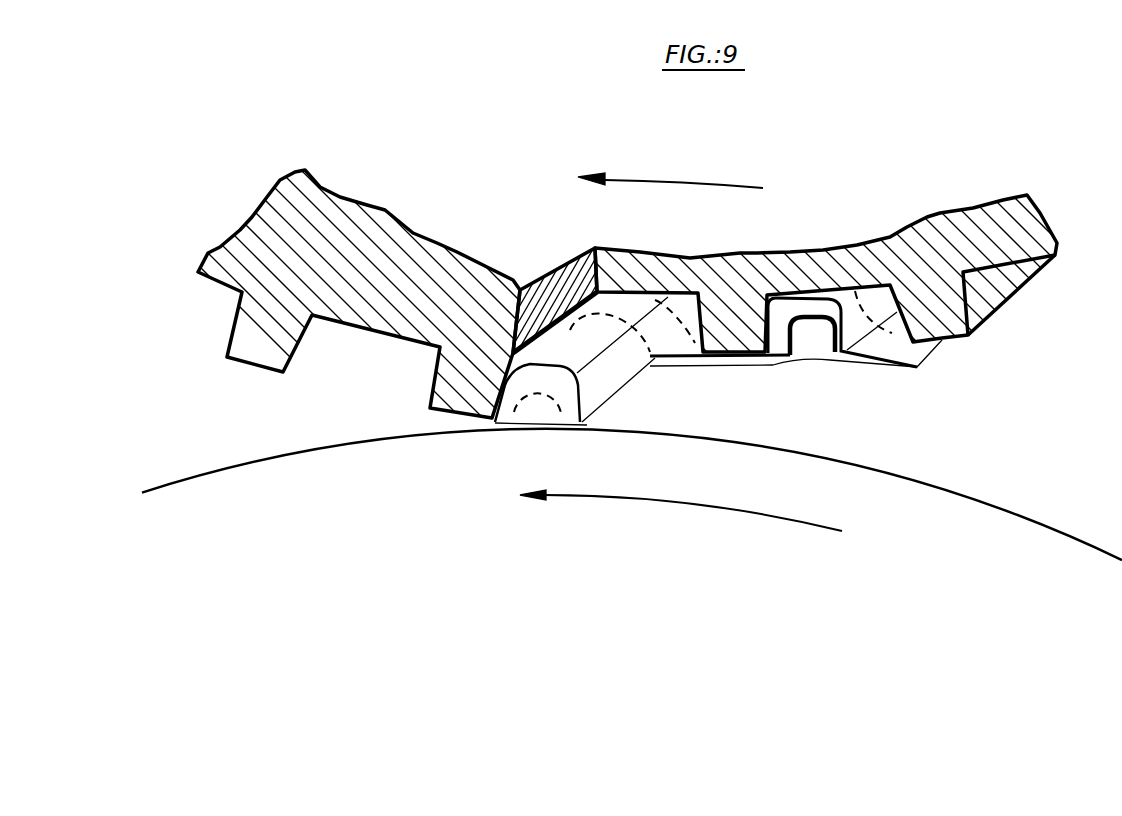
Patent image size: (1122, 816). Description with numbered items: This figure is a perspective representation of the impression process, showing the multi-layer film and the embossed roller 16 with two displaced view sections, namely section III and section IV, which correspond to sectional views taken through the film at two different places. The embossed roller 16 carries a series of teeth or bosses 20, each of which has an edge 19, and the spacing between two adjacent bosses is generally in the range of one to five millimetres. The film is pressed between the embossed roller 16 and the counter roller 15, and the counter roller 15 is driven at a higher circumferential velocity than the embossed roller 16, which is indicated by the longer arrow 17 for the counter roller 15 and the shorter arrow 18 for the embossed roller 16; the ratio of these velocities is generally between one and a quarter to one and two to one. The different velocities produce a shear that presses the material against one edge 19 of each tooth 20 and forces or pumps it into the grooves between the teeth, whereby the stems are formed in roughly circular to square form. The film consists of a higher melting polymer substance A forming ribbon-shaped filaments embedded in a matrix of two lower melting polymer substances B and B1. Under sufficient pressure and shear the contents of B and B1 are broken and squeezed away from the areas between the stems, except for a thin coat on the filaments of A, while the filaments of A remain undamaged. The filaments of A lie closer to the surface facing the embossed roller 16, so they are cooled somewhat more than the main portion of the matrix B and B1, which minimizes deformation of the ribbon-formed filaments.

The counter roller 15 is at (632, 494).
The embossed roller 16 is at (542, 285).
The longer arrow 17 is at (666, 508).
The shorter arrow 18 is at (655, 174).
The edge of tooth 19 is at (493, 405).
The tooth (boss) 20 is at (450, 368).
The higher melting polymer substance A is at (783, 352).
The lower melting polymer substance B is at (570, 393).
The lower melting polymer substance B1 is at (549, 408).
The view section III is at (1037, 233).
The view section IV is at (280, 203).